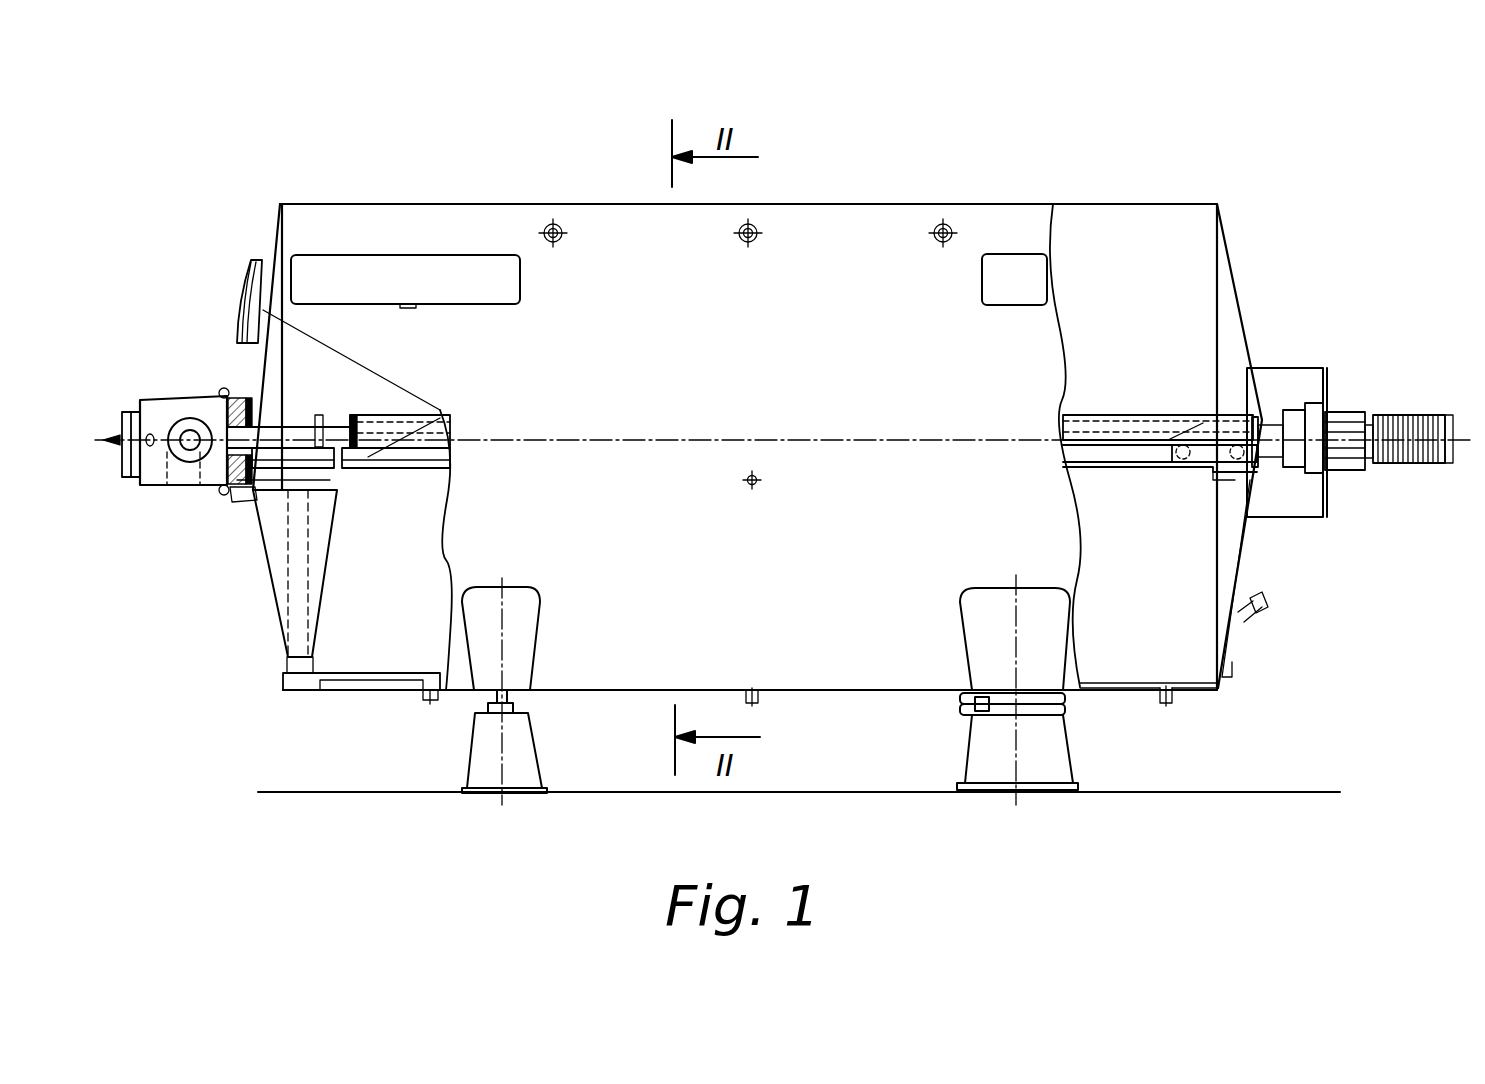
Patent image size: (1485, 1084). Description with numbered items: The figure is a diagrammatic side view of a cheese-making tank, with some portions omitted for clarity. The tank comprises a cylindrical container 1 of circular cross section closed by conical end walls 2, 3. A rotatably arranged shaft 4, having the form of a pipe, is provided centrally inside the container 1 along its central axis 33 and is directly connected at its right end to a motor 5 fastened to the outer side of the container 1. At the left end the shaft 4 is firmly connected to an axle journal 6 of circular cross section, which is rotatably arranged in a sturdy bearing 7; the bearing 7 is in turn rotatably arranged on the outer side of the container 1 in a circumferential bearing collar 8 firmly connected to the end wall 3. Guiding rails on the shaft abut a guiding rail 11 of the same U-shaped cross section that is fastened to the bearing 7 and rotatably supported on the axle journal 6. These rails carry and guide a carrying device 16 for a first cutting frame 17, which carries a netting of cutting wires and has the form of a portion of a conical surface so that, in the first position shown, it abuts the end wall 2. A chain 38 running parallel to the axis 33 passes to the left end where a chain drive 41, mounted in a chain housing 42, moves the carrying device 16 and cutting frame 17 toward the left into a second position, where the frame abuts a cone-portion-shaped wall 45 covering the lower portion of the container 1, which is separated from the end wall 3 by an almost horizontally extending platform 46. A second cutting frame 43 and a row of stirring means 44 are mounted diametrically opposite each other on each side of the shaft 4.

The cylindrical container 1 is at (1017, 227).
The conical end wall 2 is at (1238, 300).
The conical end wall 3 is at (250, 365).
The shaft 4 is at (1120, 415).
The motor 5 is at (1370, 415).
The axle journal 6 is at (300, 432).
The bearing 7 is at (222, 408).
The bearing collar 8 is at (224, 390).
The guiding rail 11 is at (330, 462).
The carrying device 16 is at (1233, 470).
The first cutting frame 17 is at (1237, 578).
The central axis 33 is at (1227, 437).
The chain 38 is at (222, 465).
The chain drive 41 is at (188, 462).
The chain housing 42 is at (150, 460).
The second cutting frame 43 is at (1150, 422).
The stirring means 44 is at (405, 470).
The wall 45 is at (333, 553).
The platform 46 is at (325, 470).